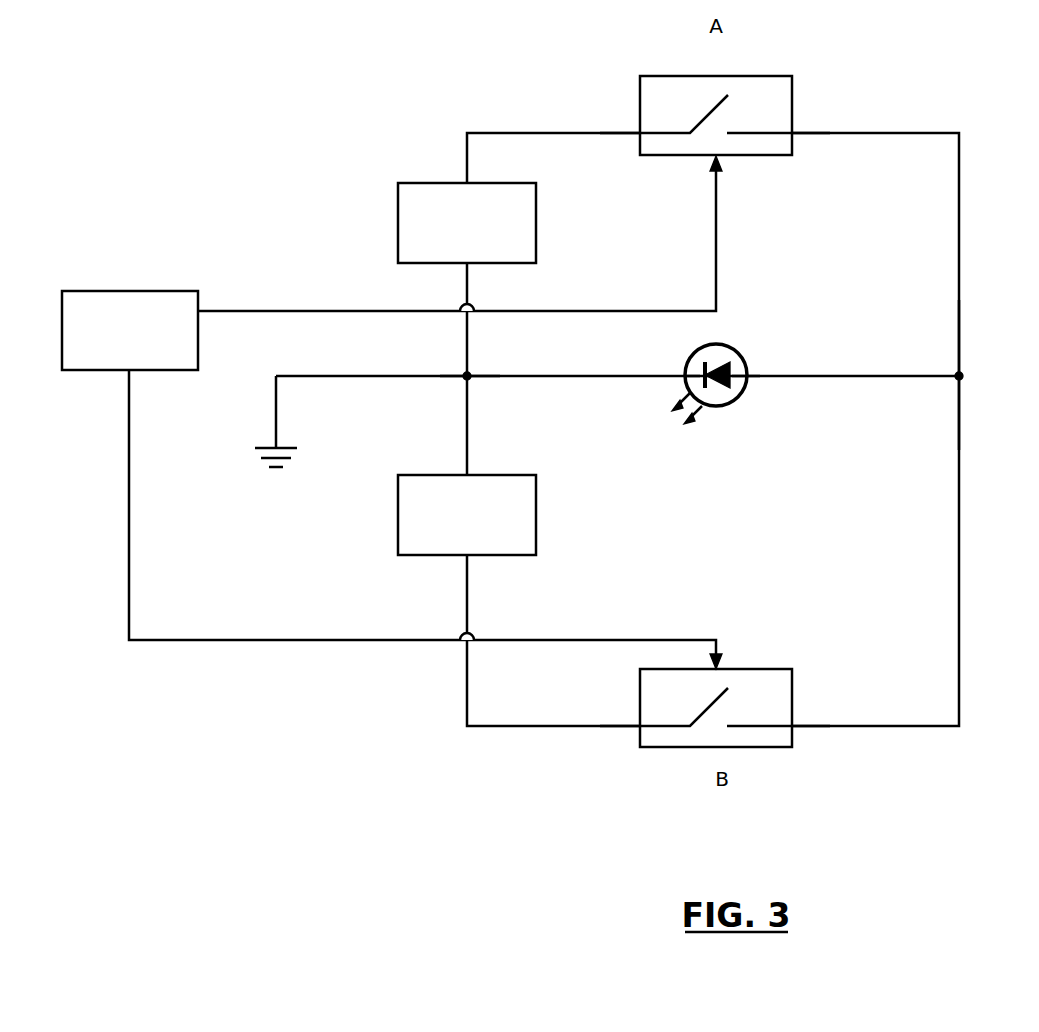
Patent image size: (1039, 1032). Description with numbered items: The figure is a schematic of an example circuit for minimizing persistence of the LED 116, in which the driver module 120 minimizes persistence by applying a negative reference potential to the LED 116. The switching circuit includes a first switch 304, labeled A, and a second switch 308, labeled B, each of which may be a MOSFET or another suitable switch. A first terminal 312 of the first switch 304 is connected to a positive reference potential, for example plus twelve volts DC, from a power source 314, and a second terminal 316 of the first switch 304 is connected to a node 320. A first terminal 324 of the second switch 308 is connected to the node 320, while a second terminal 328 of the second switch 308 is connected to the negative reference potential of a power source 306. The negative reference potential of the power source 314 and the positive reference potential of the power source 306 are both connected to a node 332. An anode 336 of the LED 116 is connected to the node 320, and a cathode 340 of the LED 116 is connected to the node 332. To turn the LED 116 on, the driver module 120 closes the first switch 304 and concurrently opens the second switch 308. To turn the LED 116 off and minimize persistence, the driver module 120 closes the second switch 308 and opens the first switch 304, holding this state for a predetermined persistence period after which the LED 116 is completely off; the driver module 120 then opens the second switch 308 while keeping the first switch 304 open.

The LED 116 is at (746, 433).
The driver module 120 is at (94, 370).
The first switch 304 is at (676, 156).
The power source 306 is at (398, 514).
The second switch 308 is at (675, 747).
The first terminal 312 is at (640, 135).
The power source 314 is at (398, 222).
The second terminal 316 is at (792, 135).
The node 320 is at (960, 377).
The first terminal 324 is at (792, 727).
The second terminal 328 is at (640, 728).
The node 332 is at (464, 376).
The anode 336 is at (756, 376).
The cathode 340 is at (686, 376).